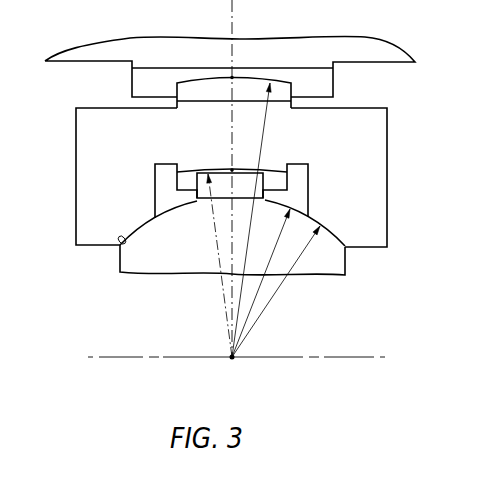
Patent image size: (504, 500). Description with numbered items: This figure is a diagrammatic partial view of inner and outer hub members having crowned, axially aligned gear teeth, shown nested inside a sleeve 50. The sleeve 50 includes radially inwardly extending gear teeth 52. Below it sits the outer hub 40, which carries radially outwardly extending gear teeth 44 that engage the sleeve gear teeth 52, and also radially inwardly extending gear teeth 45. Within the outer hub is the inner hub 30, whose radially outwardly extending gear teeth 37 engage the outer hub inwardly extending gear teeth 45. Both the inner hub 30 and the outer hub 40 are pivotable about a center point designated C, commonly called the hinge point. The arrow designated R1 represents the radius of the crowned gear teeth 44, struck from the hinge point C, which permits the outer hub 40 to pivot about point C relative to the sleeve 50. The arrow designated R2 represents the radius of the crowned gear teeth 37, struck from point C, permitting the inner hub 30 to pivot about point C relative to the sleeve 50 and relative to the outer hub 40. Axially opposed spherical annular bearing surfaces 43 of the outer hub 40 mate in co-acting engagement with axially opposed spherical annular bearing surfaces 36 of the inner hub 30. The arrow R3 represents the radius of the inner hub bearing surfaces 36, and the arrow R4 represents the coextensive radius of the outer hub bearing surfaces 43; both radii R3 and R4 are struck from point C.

The inner hub 30 is at (348, 256).
The spherical annular bearing surfaces 36 is at (141, 216).
The radially outwardly extending gear teeth 37 is at (223, 182).
The outer hub 40 is at (365, 150).
The spherical annular bearing surfaces 43 is at (118, 243).
The radially outwardly extending gear teeth 44 is at (203, 92).
The radially inwardly extending gear teeth 45 is at (188, 180).
The sleeve 50 is at (353, 55).
The radially inwardly extending gear teeth 52 is at (327, 92).
The radius of crowned gear teeth R1 is at (260, 137).
The radius of crowned gear teeth R2 is at (213, 227).
The radius of inner hub bearing surfaces R3 is at (303, 220).
The radius of outer hub bearing surfaces R4 is at (297, 263).
The center point C is at (238, 356).